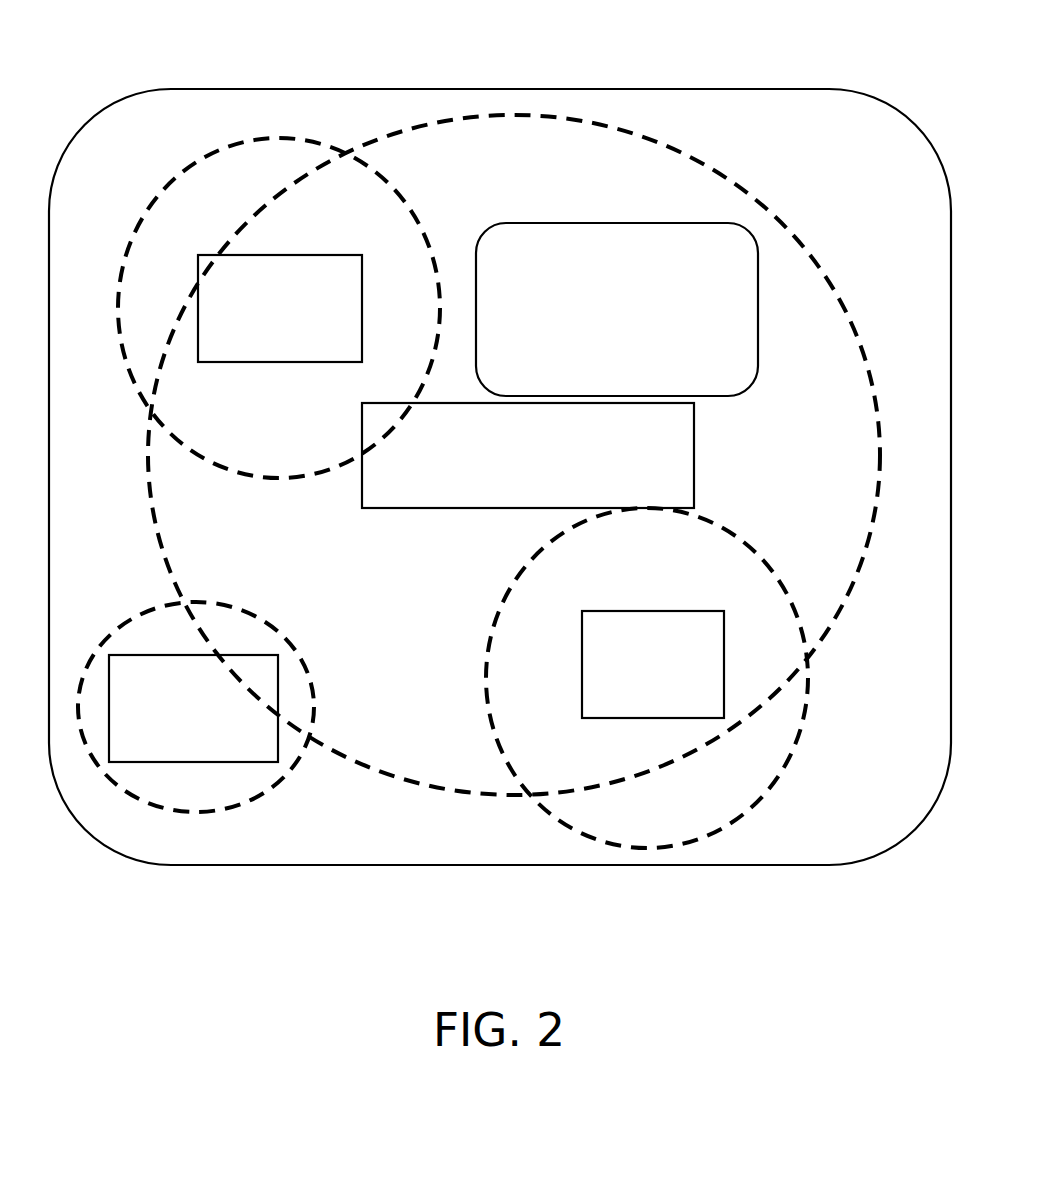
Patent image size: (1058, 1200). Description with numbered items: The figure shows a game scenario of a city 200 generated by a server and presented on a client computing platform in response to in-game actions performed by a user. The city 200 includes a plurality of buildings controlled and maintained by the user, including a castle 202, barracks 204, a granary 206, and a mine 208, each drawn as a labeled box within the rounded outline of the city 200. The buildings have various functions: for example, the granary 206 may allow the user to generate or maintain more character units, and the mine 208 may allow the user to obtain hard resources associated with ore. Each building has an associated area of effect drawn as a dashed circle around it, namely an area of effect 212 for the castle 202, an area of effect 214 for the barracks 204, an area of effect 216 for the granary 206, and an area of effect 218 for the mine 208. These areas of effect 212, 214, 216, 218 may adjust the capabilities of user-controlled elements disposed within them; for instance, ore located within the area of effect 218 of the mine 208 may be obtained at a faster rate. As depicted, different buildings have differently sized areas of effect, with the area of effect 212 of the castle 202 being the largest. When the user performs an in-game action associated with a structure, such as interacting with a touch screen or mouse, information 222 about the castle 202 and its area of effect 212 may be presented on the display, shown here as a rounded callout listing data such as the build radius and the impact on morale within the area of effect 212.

The city 200 is at (498, 89).
The castle 202 is at (528, 455).
The barracks 204 is at (280, 308).
The granary 206 is at (653, 664).
The mine 208 is at (193, 708).
The area of effect 212 is at (763, 200).
The area of effect 214 is at (440, 265).
The area of effect 216 is at (805, 640).
The area of effect 218 is at (280, 632).
The information 222 is at (758, 297).